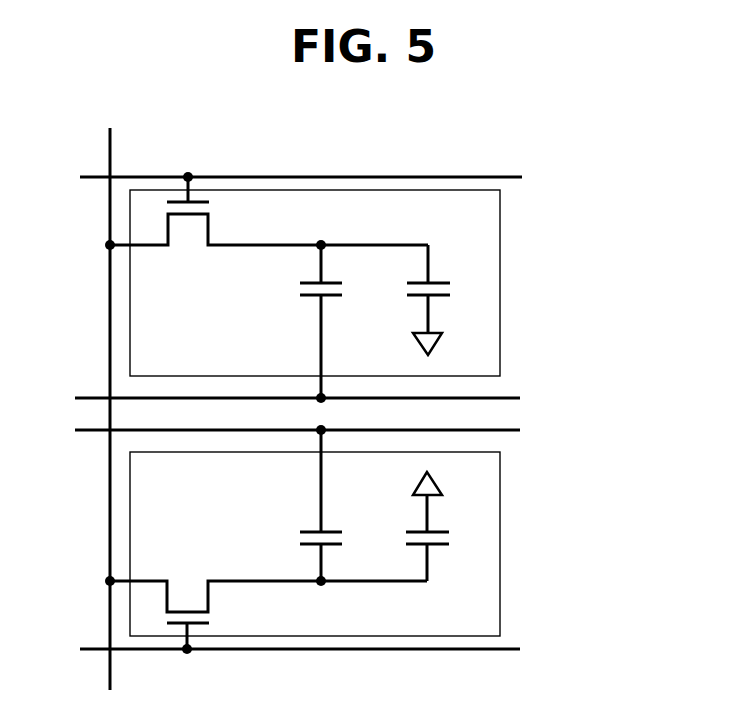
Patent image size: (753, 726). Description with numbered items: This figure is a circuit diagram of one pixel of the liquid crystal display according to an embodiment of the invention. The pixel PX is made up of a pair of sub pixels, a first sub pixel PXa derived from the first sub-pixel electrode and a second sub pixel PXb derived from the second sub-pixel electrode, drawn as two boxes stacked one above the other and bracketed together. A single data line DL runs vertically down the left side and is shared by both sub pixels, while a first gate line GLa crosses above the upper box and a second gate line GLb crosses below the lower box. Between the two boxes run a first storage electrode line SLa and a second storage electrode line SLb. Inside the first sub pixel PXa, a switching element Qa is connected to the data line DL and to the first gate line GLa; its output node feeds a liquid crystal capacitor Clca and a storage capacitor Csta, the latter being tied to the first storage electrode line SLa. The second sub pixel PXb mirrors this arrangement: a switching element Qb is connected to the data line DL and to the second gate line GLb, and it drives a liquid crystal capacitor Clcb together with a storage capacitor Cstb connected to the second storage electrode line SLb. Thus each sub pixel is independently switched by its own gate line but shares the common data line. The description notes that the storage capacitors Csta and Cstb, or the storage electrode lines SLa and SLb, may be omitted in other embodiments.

The data line DL is at (112, 396).
The first gate line GLa is at (326, 176).
The second gate line GLb is at (324, 649).
The first storage electrode line SLa is at (278, 396).
The second storage electrode line SLb is at (278, 428).
The switching element Qa is at (266, 213).
The switching element Qb is at (266, 612).
The storage capacitor Csta is at (292, 321).
The storage capacitor Cstb is at (300, 505).
The liquid crystal capacitor Clca is at (448, 300).
The liquid crystal capacitor Clcb is at (447, 526).
The first sub pixel PXa is at (500, 343).
The second sub pixel PXb is at (500, 475).
The pixel PX is at (637, 367).